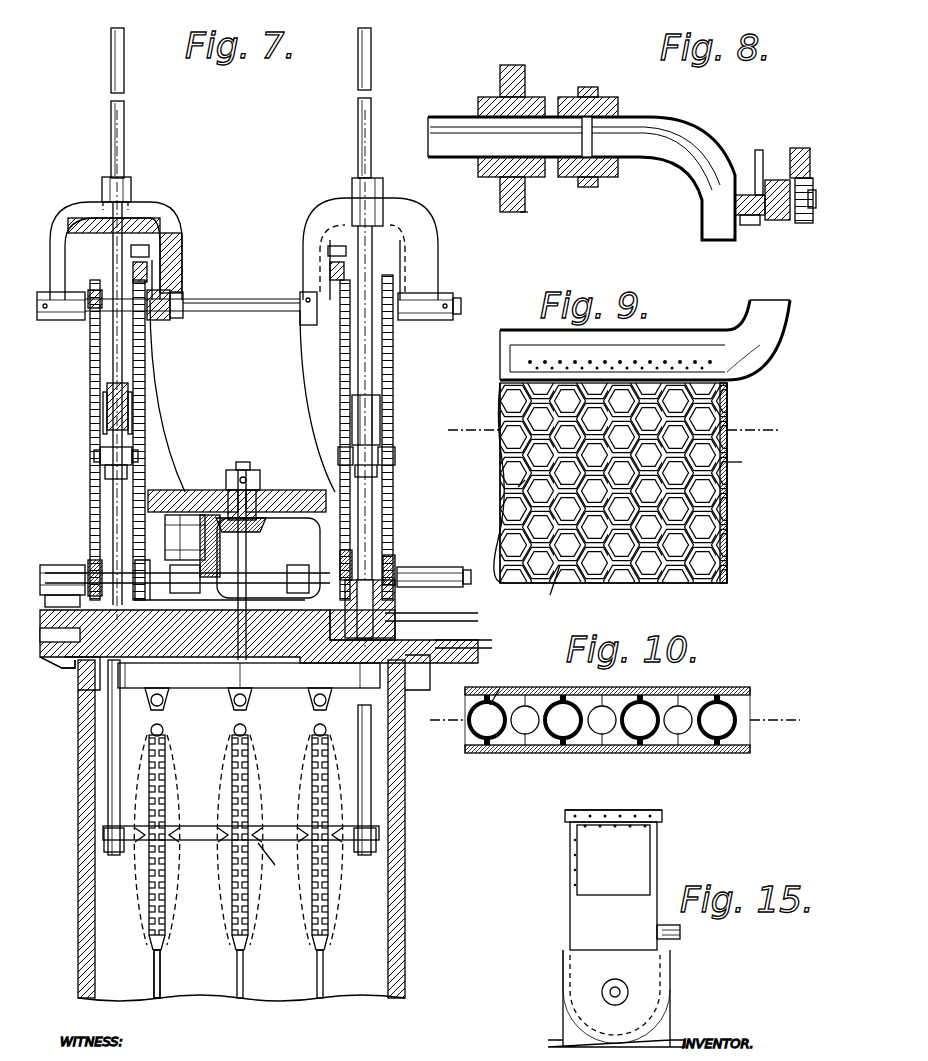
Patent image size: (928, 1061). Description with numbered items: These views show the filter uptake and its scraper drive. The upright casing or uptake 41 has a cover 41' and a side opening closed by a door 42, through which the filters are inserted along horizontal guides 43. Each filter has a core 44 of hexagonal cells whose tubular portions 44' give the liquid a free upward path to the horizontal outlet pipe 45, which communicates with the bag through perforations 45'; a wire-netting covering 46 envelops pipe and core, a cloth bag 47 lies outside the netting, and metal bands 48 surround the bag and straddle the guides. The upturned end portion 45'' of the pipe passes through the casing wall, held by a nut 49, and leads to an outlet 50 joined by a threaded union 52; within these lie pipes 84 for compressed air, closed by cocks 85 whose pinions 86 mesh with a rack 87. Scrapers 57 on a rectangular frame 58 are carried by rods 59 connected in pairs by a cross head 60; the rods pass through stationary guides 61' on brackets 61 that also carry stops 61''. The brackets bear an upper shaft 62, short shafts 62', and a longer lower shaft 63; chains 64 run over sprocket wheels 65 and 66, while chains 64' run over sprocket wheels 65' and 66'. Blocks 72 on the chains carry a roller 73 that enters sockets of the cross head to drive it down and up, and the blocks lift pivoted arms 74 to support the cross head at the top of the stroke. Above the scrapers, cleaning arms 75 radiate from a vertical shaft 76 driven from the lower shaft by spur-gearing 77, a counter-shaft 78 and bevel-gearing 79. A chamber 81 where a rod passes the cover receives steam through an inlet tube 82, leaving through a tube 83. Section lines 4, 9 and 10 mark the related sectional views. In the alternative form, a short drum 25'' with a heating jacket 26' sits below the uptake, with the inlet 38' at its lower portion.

In FIG. 7, the section line 4— 4 is at (108, 132).
In FIG. 10, the section line 9— 9 is at (618, 708).
In FIG. 9, the section line 10— 10 is at (794, 425).
In FIG. 15, the drum 25'' is at (571, 963).
In FIG. 15, the heating jacket 26' is at (597, 998).
In FIG. 15, the inlet 38' is at (686, 948).
In FIG. 7, the casing or uptake 41 is at (230, 828).
In FIG. 8, the casing or uptake 41 is at (536, 226).
In FIG. 15, the casing or uptake 41 is at (613, 880).
In FIG. 7, the cover 41' is at (43, 678).
In FIG. 15, the cover 41' is at (598, 822).
In FIG. 15, the door 42 is at (613, 860).
In FIG. 7, the horizontal guides 43 is at (239, 974).
In FIG. 7, the core 44 is at (174, 843).
In FIG. 9, the core 44 is at (501, 482).
In FIG. 10, the core 44 is at (602, 740).
In FIG. 9, the tubular portions 44' is at (564, 586).
In FIG. 10, the tubular portions 44' is at (504, 684).
In FIG. 7, the outlet pipe 45 is at (256, 843).
In FIG. 9, the outlet pipe 45 is at (645, 340).
In FIG. 9, the perforations 45' is at (776, 351).
In FIG. 8, the upturned end portion 45'' is at (571, 133).
In FIG. 9, the covering 46 is at (747, 460).
In FIG. 10, the covering 46 is at (660, 745).
In FIG. 9, the cloth bag 47 is at (727, 492).
In FIG. 10, the cloth bag 47 is at (700, 688).
In FIG. 7, the metal bands 48 is at (330, 905).
In FIG. 8, the nut 49 is at (535, 97).
In FIG. 8, the outlet 50 is at (655, 160).
In FIG. 8, the threaded sleeve or union 52 is at (612, 98).
In FIG. 7, the scrapers 57 is at (275, 862).
In FIG. 7, the frame 58 is at (198, 826).
In FIG. 7, the rods 59 is at (111, 112).
In FIG. 7, the cross head 60 is at (105, 405).
In FIG. 7, the brackets 61 is at (335, 366).
In FIG. 7, the stationary guides 61' is at (143, 185).
In FIG. 7, the stops 61'' is at (140, 244).
In FIG. 7, the upper shaft 62 is at (201, 293).
In FIG. 7, the short shafts 62' is at (48, 287).
In FIG. 7, the lower shaft 63 is at (258, 575).
In FIG. 7, the chains 64 is at (166, 440).
In FIG. 7, the chains 64' is at (74, 440).
In FIG. 7, the sprocket wheels 65 is at (170, 291).
In FIG. 7, the sprocket wheels 65' is at (97, 277).
In FIG. 7, the sprocket wheels 66 is at (82, 554).
In FIG. 7, the sprocket wheels 66' is at (64, 570).
In FIG. 7, the blocks 72 is at (98, 455).
In FIG. 7, the roller 73 is at (112, 472).
In FIG. 7, the arms 74 is at (148, 262).
In FIG. 7, the cleaning arms 75 is at (249, 675).
In FIG. 7, the vertical shaft 76 is at (248, 468).
In FIG. 7, the spur-gearing 77 is at (234, 500).
In FIG. 7, the counter-shaft 78 is at (172, 515).
In FIG. 7, the bevel-gearing 79 is at (262, 526).
In FIG. 7, the chamber 81 is at (350, 640).
In FIG. 7, the inlet tube 82 is at (478, 617).
In FIG. 7, the tube 83 is at (492, 644).
In FIG. 8, the pipes 84 is at (758, 165).
In FIG. 8, the cocks 85 is at (752, 225).
In FIG. 8, the pinions 86 is at (805, 222).
In FIG. 8, the rack 87 is at (802, 148).